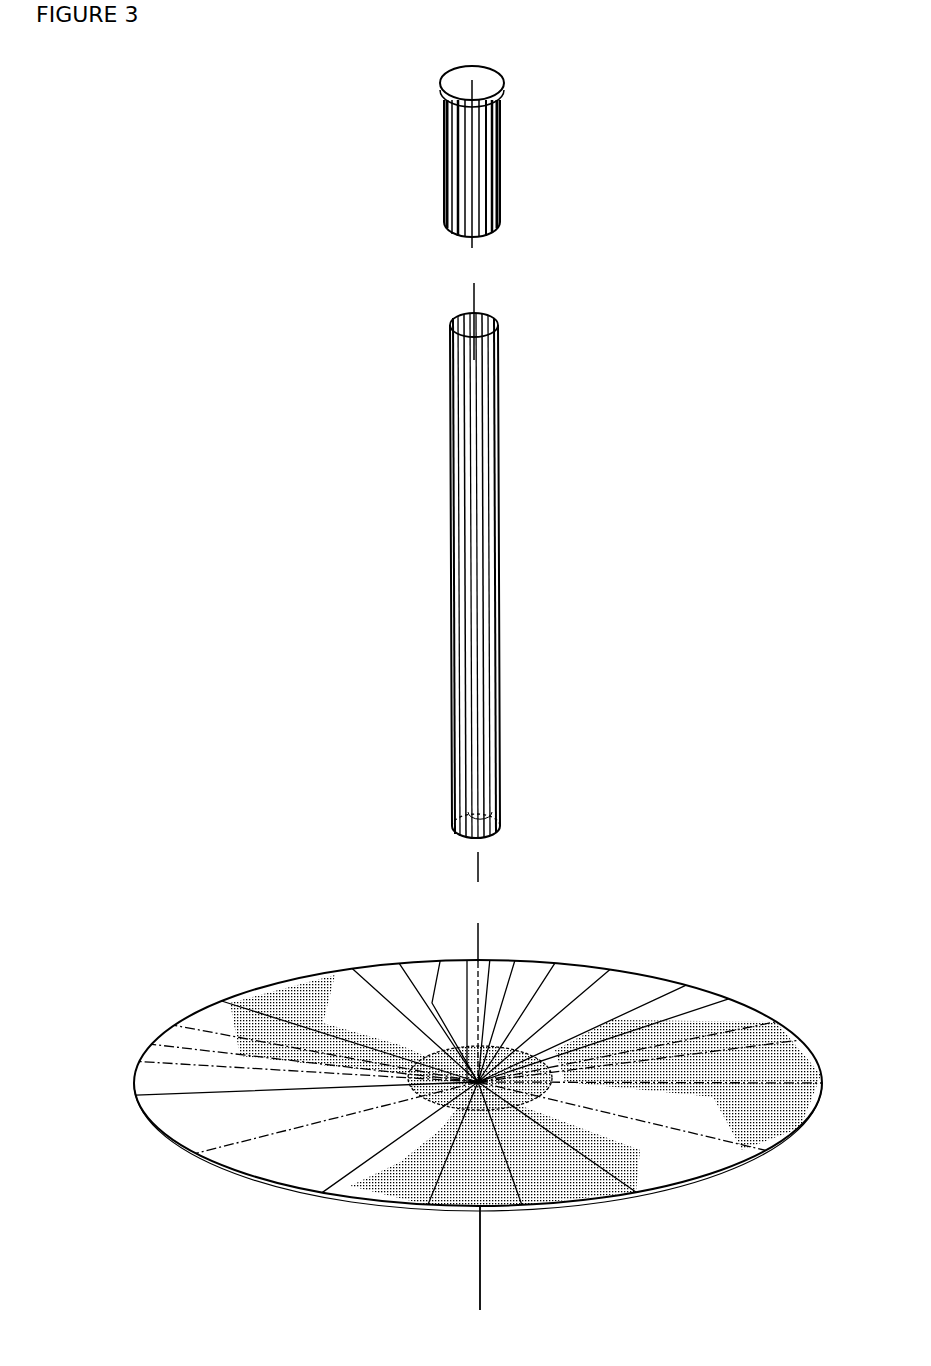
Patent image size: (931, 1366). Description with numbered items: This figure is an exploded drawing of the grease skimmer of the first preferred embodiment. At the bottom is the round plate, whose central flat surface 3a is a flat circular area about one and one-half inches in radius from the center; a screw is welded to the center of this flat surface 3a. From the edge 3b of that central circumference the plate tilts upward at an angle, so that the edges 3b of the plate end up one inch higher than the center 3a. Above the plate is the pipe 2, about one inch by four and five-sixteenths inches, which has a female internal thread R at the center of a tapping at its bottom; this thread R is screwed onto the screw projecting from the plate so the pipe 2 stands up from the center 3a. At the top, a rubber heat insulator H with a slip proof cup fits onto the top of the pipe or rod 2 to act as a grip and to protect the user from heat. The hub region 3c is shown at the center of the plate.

The rubber heat insulator H is at (503, 128).
The pipe 2 is at (503, 571).
The female internal thread R is at (487, 817).
The flat surface 3a is at (442, 1111).
The edge of the plate 3b is at (644, 967).
The disc hub 3c is at (476, 1080).